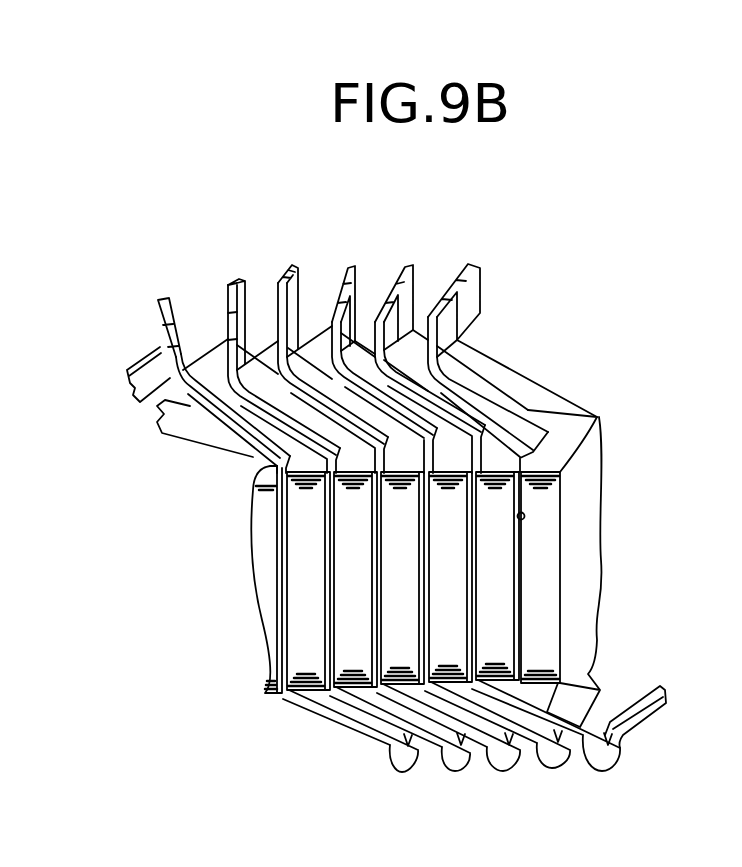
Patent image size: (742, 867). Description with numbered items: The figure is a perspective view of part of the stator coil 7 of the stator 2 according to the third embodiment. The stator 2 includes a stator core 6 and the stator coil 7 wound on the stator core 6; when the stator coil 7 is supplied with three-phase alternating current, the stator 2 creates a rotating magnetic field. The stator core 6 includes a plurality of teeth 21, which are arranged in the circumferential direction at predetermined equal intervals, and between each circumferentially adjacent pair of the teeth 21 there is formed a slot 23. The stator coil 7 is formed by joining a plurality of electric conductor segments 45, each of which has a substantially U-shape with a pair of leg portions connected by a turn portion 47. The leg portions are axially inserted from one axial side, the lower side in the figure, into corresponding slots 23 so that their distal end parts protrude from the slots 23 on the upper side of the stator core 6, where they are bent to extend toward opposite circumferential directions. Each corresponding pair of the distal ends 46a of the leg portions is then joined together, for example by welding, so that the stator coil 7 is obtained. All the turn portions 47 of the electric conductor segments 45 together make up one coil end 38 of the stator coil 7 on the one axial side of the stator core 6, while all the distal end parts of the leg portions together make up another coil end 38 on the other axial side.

The stator 2 is at (666, 208).
The stator coil 7 is at (490, 254).
The coil end 38 is at (312, 373).
The distal end of leg portion 46a is at (390, 317).
The electric conductor segment 45 is at (447, 390).
The stator core 6 is at (573, 420).
The slot 23 is at (527, 523).
The tooth 21 is at (497, 555).
The turn portion 47 is at (383, 712).